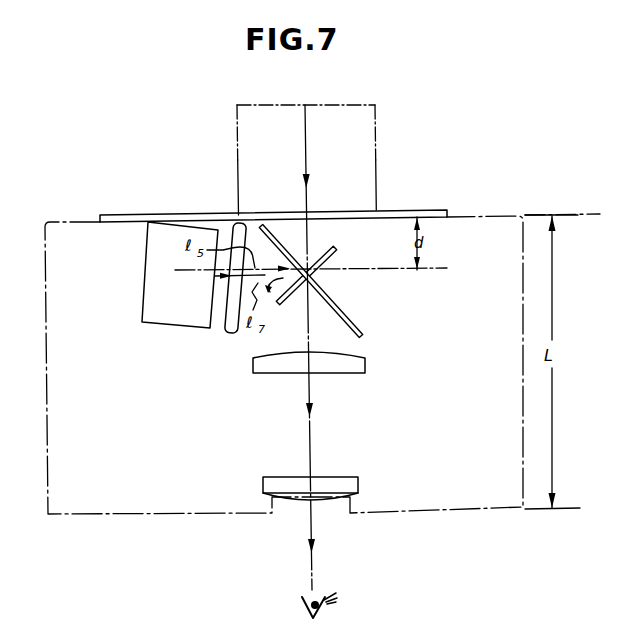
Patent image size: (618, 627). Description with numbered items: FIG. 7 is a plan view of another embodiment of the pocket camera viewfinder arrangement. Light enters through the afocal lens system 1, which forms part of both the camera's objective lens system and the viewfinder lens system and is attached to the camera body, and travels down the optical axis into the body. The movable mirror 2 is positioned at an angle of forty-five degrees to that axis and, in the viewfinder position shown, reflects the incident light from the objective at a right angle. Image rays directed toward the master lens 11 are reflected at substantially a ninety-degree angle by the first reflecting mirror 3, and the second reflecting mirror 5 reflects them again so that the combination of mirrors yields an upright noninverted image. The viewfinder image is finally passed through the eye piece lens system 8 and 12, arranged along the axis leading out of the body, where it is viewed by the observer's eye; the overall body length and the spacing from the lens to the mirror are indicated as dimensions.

The afocal lens system 1 is at (374, 164).
The movable mirror 2 is at (333, 248).
The first reflecting mirror 3 is at (155, 315).
The second reflecting mirror 5 is at (202, 310).
The eye piece lens system 8 is at (365, 364).
The master lens 11 is at (365, 322).
The eye piece lens system 12 is at (358, 484).